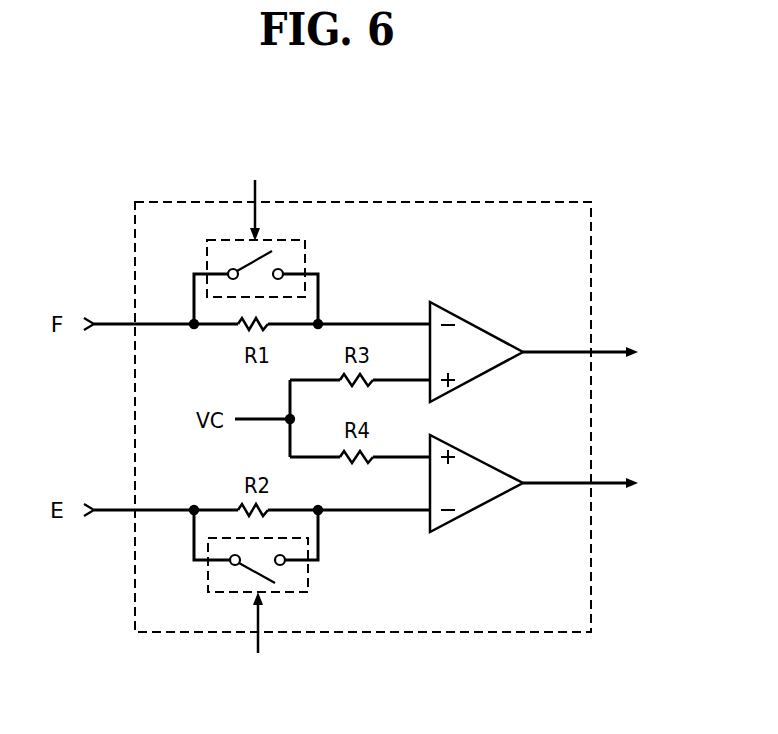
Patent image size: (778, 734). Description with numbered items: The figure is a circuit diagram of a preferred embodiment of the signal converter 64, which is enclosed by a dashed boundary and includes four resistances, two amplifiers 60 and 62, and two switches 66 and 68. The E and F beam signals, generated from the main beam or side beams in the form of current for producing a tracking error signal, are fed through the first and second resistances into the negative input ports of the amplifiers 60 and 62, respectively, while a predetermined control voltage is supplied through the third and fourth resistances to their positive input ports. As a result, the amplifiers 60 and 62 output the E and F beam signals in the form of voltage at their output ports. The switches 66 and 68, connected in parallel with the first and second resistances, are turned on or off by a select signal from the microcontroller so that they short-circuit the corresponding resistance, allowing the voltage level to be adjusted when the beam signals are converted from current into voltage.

The amplifier 60 is at (475, 325).
The amplifier 62 is at (477, 455).
The signal converter 64 is at (507, 202).
The switch 66 is at (305, 258).
The switch 68 is at (308, 585).